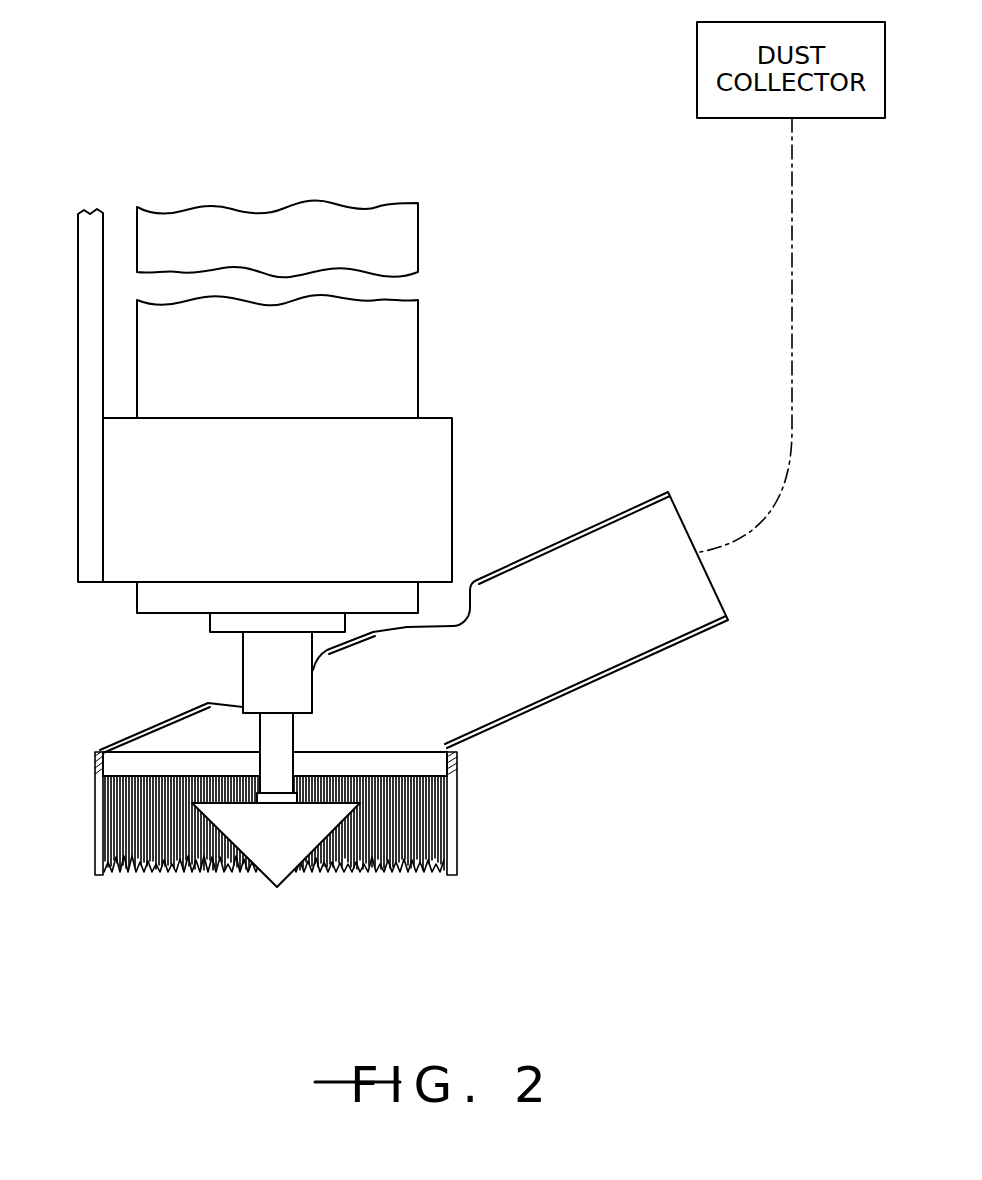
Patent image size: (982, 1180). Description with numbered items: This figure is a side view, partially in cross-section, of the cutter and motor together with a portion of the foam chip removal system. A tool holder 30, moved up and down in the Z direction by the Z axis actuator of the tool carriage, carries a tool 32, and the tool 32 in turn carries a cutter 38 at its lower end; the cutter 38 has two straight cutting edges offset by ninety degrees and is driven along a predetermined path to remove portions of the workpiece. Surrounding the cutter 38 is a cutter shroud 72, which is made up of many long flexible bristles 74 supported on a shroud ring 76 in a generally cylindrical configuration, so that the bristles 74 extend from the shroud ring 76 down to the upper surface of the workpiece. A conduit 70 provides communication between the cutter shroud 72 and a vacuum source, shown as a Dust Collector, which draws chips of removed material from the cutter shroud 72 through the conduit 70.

The tool holder 30 is at (452, 478).
The tool 32 is at (418, 347).
The cutter 38 is at (277, 888).
The conduit 70 is at (583, 692).
The cutter shroud 72 is at (328, 830).
The bristles 74 is at (167, 873).
The shroud ring 76 is at (100, 750).